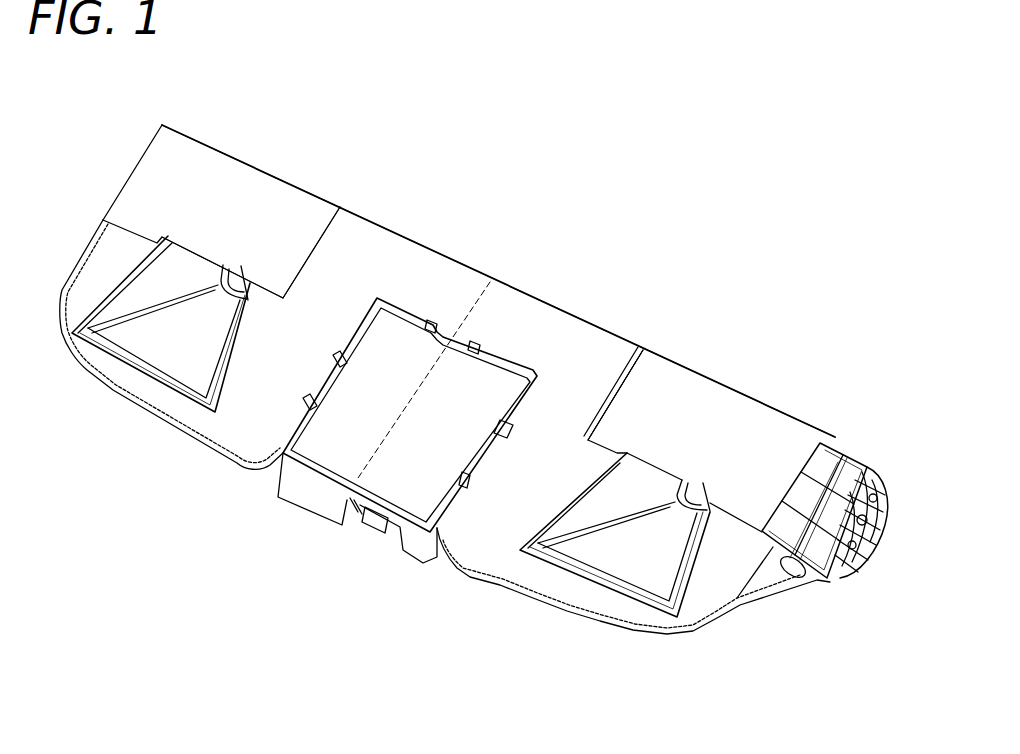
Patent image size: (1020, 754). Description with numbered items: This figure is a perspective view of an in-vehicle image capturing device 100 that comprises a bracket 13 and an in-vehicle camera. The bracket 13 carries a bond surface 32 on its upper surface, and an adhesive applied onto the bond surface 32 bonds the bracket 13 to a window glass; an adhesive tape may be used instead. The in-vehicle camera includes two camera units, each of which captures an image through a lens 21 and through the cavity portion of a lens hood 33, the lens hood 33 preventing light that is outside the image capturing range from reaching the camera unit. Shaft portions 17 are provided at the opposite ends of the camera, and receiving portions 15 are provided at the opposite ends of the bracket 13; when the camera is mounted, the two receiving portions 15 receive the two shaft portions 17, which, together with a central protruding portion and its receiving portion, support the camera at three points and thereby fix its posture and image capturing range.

The in-vehicle image capturing device 100 is at (585, 117).
The bracket 13 is at (433, 290).
The bond surface 32 is at (200, 197).
The lens 21 is at (240, 277).
The lens hood 33 is at (185, 345).
The shaft portion 17 is at (863, 468).
The receiving portion 15 is at (886, 472).